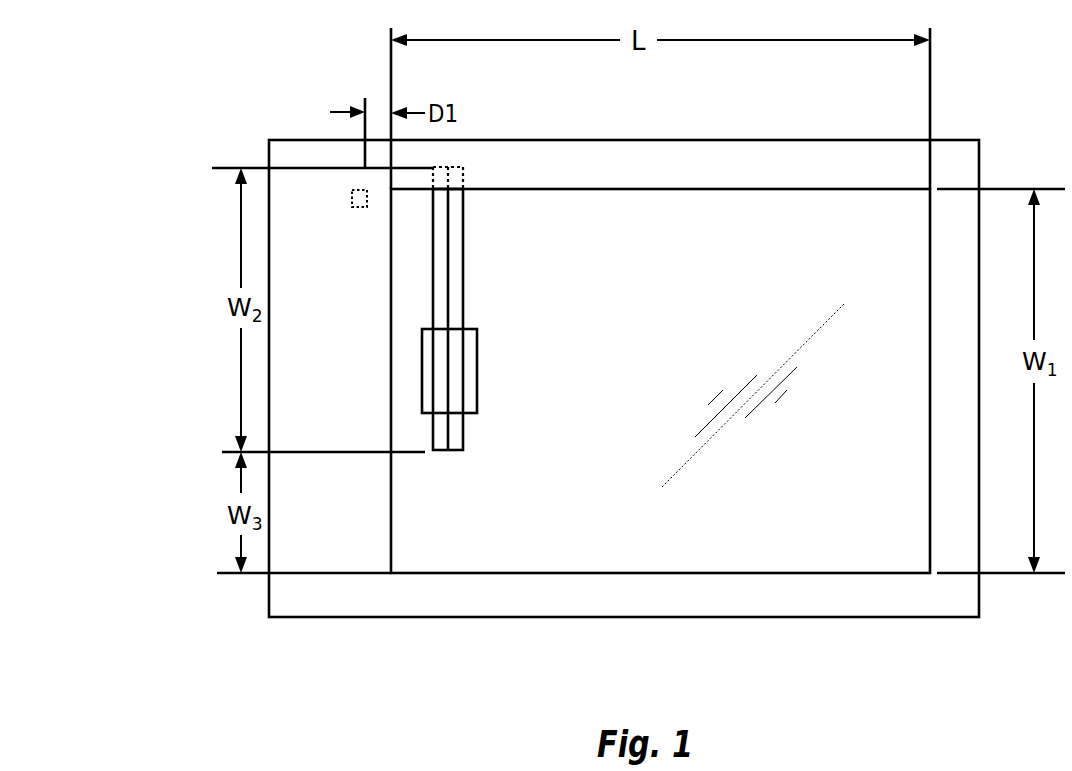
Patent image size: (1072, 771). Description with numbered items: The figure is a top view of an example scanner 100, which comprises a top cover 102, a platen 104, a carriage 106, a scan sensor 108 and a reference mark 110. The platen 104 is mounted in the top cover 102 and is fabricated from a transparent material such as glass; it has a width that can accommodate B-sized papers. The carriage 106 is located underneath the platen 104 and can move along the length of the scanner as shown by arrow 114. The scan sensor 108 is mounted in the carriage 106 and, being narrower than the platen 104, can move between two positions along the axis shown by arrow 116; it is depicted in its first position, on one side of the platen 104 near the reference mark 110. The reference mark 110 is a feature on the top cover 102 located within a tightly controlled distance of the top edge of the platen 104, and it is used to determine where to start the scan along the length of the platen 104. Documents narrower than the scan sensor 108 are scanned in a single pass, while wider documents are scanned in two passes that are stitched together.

The scanner 100 is at (214, 379).
The top cover 102 is at (310, 617).
The platen 104 is at (827, 535).
The carriage 106 is at (477, 333).
The scan sensor 108 is at (464, 220).
The reference mark 110 is at (352, 194).
The arrow 114 is at (511, 371).
The arrow 116 is at (449, 476).